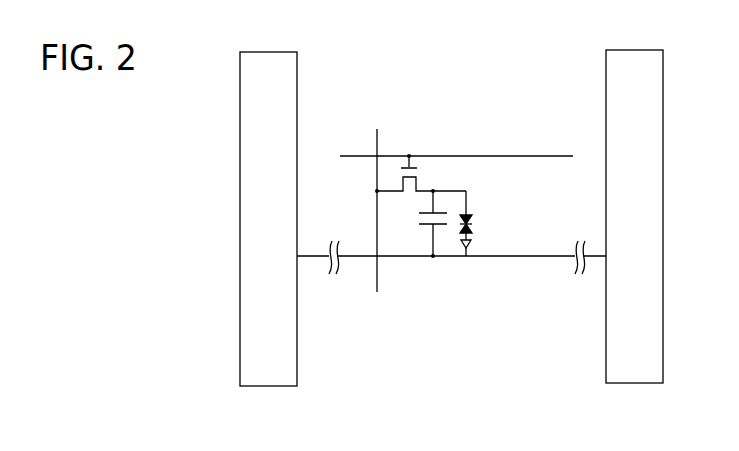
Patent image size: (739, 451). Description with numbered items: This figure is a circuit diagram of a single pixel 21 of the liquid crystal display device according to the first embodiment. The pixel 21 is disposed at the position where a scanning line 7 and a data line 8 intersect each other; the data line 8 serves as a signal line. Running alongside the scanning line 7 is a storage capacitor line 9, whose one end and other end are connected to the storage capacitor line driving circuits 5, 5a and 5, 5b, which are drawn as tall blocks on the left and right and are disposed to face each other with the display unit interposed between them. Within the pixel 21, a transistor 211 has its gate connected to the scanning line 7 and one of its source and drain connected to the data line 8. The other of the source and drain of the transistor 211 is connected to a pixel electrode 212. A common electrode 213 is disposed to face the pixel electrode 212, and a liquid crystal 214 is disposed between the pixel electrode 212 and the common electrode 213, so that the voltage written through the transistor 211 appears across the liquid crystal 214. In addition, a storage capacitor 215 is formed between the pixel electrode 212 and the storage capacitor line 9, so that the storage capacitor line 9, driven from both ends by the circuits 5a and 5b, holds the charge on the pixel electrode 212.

The storage capacitor line driving circuit 5 is at (451, 203).
The storage capacitor line driving circuit 5a is at (272, 52).
The storage capacitor line driving circuit 5b is at (634, 50).
The scanning line 7 is at (355, 156).
The data line 8 is at (378, 145).
The storage capacitor line 9 is at (512, 258).
The pixel 21 is at (452, 203).
The transistor 211 is at (404, 195).
The pixel electrode 212 is at (468, 214).
The common electrode 213 is at (471, 243).
The liquid crystal 214 is at (470, 226).
The storage capacitor 215 is at (441, 221).